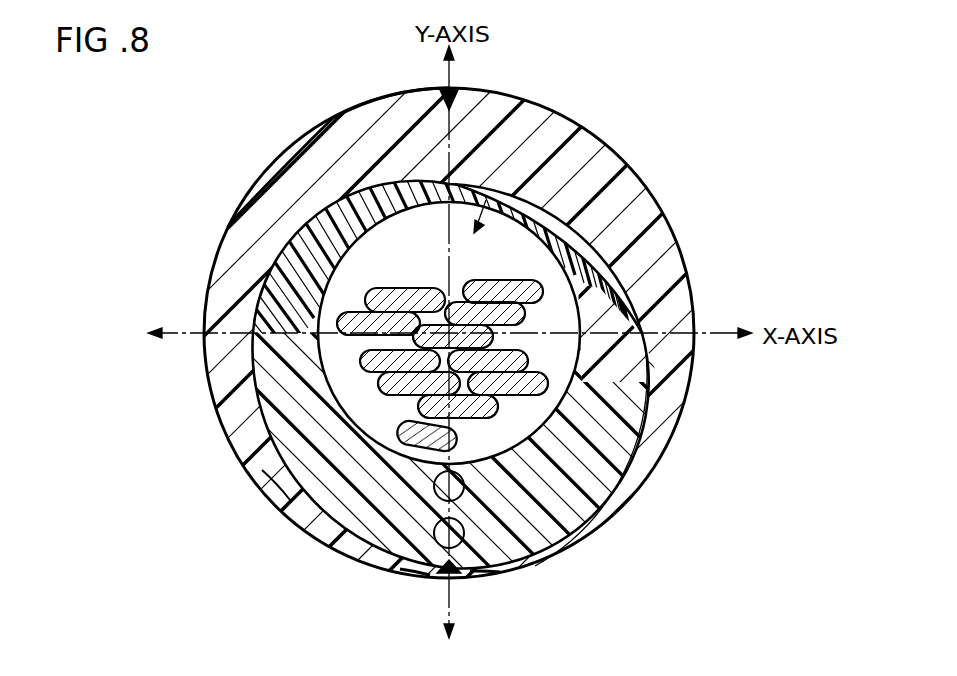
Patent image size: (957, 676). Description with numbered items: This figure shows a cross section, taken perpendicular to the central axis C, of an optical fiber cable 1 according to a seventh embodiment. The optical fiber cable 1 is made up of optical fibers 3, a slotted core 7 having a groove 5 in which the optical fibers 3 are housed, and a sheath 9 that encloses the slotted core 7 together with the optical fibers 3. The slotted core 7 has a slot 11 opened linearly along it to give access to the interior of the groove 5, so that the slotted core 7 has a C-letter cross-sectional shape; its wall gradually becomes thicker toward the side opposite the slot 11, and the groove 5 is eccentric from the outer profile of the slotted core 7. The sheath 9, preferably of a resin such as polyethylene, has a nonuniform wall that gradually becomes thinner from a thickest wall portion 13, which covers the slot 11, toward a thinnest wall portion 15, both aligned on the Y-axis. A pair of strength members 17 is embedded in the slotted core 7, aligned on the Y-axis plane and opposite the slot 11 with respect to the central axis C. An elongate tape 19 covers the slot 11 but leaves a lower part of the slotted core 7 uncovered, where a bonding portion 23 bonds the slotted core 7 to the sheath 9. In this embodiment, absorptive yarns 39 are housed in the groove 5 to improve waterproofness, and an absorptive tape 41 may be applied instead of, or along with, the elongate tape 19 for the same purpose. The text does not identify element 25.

The optical fiber cable 1 is at (720, 117).
The optical fibers 3 is at (500, 408).
The groove 5 is at (572, 332).
The slotted core 7 is at (585, 478).
The sheath 9 is at (612, 158).
The slot 11 is at (557, 124).
The thickest wall portion 13 is at (446, 89).
The thinnest wall portion 15 is at (426, 575).
The strength members 17 is at (466, 488).
The elongate tape 19 is at (616, 246).
The absorptive tape 41 is at (450, 375).
The bonding portion 23 is at (415, 572).
The bottom wall portion 25 is at (476, 572).
The absorptive yarns 39 is at (395, 447).
The central axis C is at (300, 455).